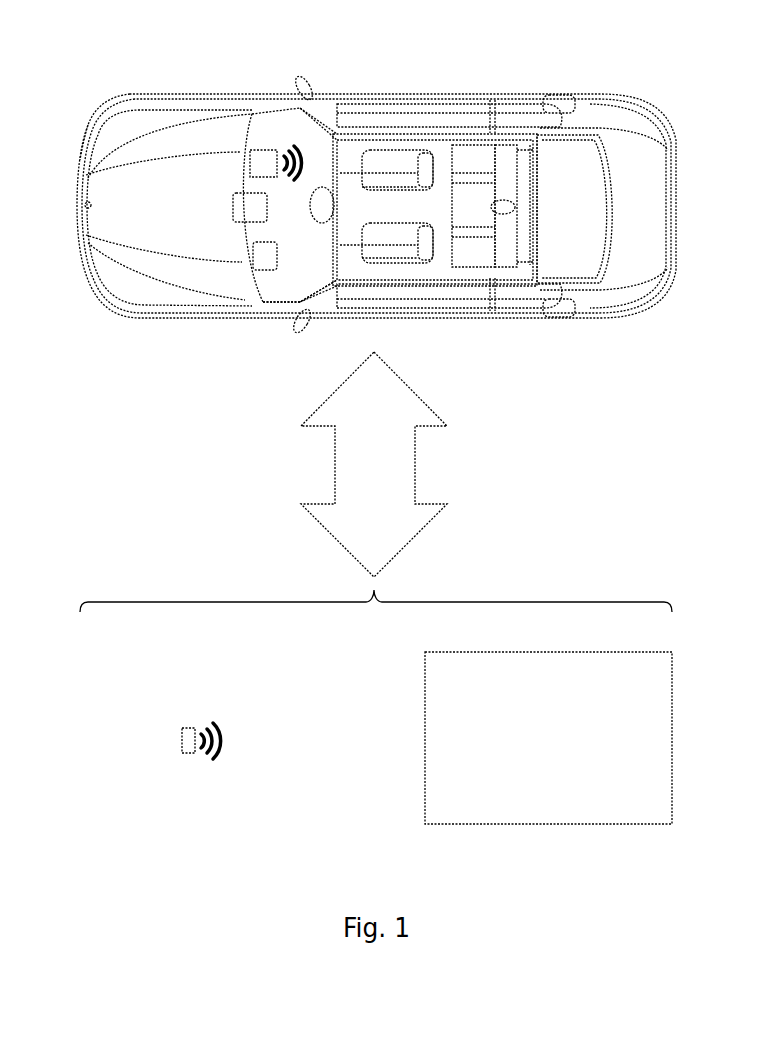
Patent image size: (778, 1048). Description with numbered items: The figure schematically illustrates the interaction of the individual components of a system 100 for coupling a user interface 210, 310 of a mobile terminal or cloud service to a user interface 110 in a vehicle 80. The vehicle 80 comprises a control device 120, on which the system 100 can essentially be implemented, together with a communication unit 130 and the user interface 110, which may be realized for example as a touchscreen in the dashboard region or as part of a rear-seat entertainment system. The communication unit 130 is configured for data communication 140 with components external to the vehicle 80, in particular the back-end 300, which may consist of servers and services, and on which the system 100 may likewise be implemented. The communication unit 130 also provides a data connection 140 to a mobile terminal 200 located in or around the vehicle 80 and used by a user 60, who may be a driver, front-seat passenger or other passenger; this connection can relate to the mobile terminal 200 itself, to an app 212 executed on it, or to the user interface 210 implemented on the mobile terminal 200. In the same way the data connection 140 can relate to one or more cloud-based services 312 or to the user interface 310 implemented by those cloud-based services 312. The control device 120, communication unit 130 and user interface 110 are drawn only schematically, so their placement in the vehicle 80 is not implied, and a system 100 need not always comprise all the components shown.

The system 100 is at (118, 61).
The vehicle 80 is at (83, 148).
The communication unit 130 is at (252, 162).
The user interface 110 is at (235, 203).
The control device 120 is at (253, 253).
The user 60 is at (298, 320).
The data communication 140 is at (415, 470).
The mobile terminal 200 is at (184, 732).
The user interface 210 is at (184, 748).
The app 212 is at (182, 740).
The back-end component 300 is at (425, 672).
The user interface 310 is at (477, 726).
The cloud-based service 312 is at (477, 726).